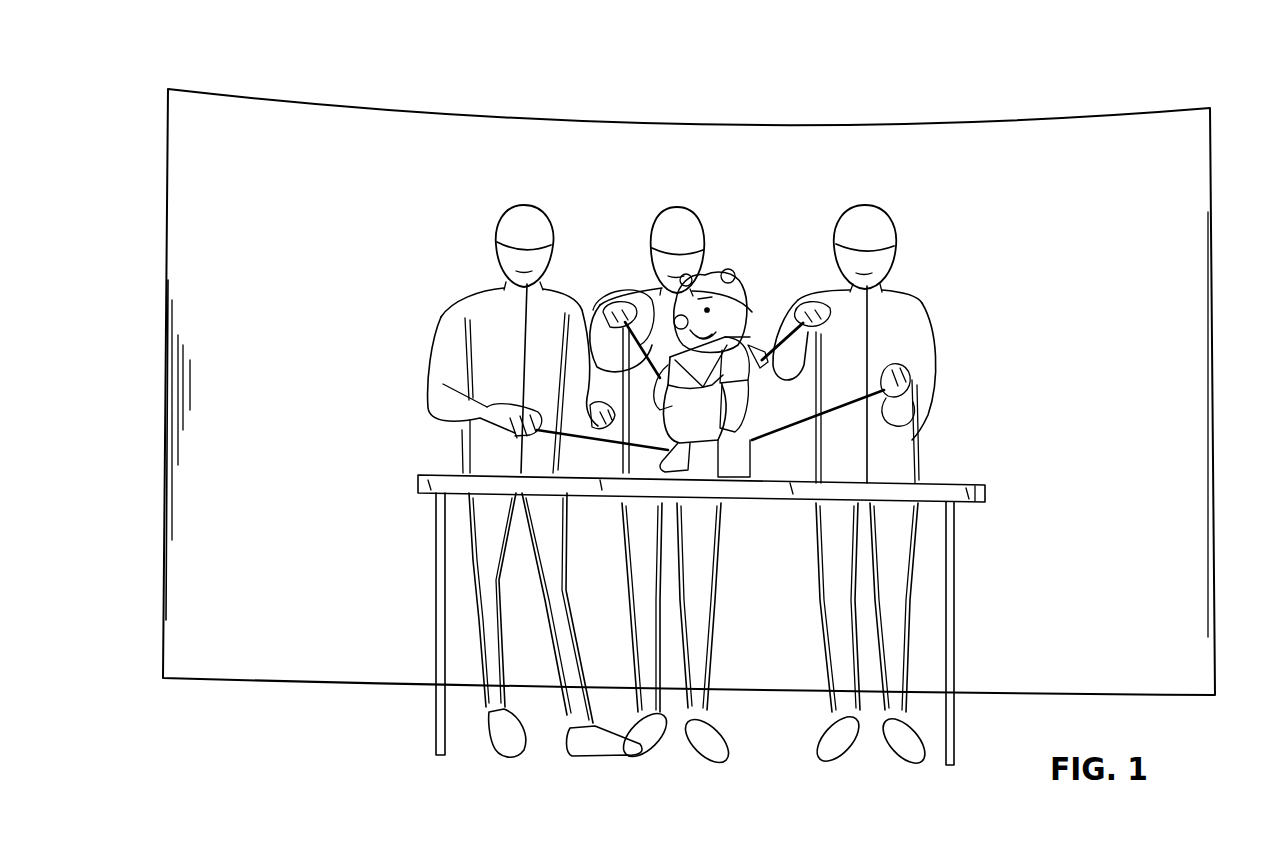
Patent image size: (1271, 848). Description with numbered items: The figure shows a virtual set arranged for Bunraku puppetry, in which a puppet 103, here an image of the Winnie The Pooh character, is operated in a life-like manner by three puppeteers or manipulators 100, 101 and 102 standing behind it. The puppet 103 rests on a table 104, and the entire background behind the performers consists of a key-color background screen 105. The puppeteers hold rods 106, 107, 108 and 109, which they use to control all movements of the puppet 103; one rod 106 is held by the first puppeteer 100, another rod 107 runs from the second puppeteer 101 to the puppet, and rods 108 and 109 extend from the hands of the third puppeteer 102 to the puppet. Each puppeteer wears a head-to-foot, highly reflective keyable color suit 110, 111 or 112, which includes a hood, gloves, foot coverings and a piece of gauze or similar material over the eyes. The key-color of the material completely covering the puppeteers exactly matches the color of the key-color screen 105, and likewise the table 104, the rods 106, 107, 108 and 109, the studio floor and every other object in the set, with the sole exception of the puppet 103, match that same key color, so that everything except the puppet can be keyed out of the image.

The puppeteer/manipulator 100 is at (491, 464).
The puppeteer/manipulator 101 is at (698, 468).
The puppeteer/manipulator 102 is at (894, 466).
The puppet 103 is at (744, 277).
The table 104 is at (958, 478).
The key-color background screen 105 is at (1053, 108).
The rod 106 is at (568, 447).
The rod 107 is at (620, 288).
The rod 108 is at (792, 372).
The rod 109 is at (780, 440).
The keyable color suit 110 is at (490, 333).
The keyable color suit 111 is at (706, 525).
The keyable color suit 112 is at (912, 338).